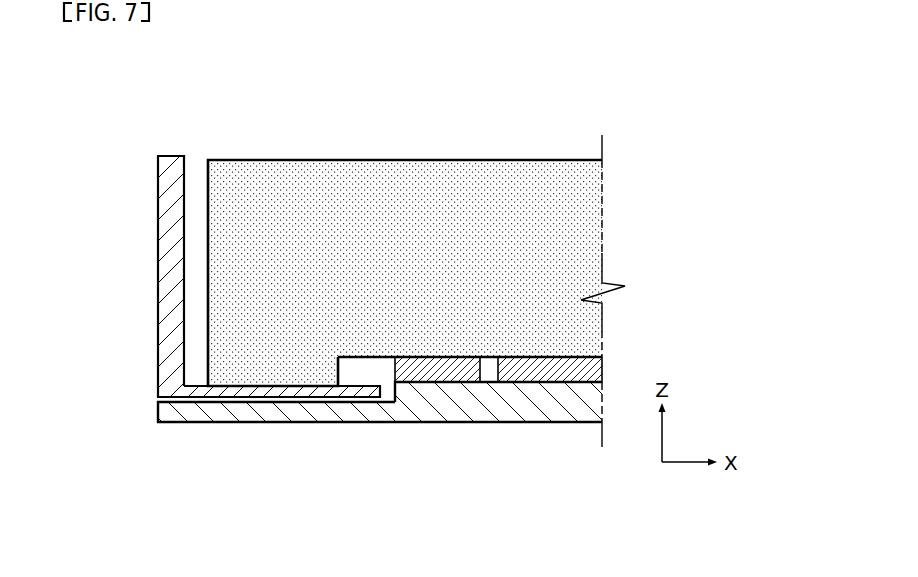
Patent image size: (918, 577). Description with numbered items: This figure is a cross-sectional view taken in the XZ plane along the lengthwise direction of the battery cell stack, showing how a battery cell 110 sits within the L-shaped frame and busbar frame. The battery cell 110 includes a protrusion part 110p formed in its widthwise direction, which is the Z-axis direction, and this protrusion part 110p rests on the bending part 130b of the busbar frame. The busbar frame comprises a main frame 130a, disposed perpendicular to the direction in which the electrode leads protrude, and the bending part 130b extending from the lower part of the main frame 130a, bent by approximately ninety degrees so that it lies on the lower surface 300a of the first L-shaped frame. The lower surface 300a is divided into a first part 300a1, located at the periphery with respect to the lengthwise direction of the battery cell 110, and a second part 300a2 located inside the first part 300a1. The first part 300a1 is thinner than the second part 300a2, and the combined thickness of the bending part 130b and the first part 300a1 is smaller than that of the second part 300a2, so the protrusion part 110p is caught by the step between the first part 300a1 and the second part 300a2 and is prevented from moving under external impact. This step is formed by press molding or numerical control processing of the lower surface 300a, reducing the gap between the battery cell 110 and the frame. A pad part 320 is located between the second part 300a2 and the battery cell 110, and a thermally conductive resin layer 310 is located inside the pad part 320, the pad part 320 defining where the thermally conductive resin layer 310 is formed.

The battery cell 110 is at (399, 192).
The protrusion part 110p is at (248, 373).
The main frame 130a is at (170, 225).
The bending part 130b is at (347, 392).
The lower surface of the first L-shaped frame 300a is at (705, 83).
The first part 300a1 is at (190, 410).
The second part 300a2 is at (493, 407).
The thermally conductive resin layer 310 is at (560, 370).
The pad part 320 is at (436, 368).